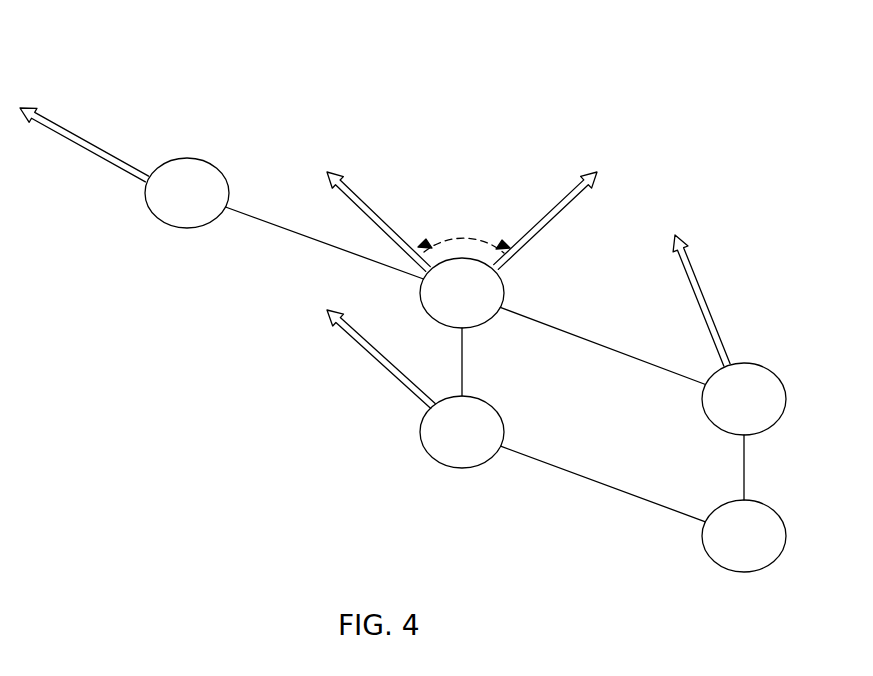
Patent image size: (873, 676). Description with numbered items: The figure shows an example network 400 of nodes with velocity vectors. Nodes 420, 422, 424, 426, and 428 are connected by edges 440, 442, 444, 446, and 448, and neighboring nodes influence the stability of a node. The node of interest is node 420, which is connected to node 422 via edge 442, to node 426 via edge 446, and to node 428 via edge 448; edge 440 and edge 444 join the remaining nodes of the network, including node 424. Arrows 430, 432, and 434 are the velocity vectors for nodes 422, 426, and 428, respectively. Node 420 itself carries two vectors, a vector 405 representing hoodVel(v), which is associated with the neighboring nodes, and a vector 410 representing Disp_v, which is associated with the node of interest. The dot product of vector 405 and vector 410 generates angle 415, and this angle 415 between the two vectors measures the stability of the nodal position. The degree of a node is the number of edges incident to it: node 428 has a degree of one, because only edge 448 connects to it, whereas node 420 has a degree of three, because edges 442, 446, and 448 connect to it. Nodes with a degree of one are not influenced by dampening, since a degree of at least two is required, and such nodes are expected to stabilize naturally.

The radio frequency mesh network 400 is at (608, 62).
The velocity vector hoodVel(v) 405 is at (355, 212).
The velocity vector Disp_v 410 is at (567, 212).
The angle 415 is at (463, 230).
The node 420 is at (452, 330).
The node 422 is at (703, 410).
The node 424 is at (725, 568).
The node 426 is at (443, 468).
The node 428 is at (200, 228).
The arrow 430 is at (685, 278).
The arrow 432 is at (377, 365).
The arrow 434 is at (87, 152).
The edge 440 is at (744, 470).
The edge 442 is at (620, 353).
The edge 444 is at (602, 485).
The edge 446 is at (465, 362).
The edge 448 is at (307, 237).